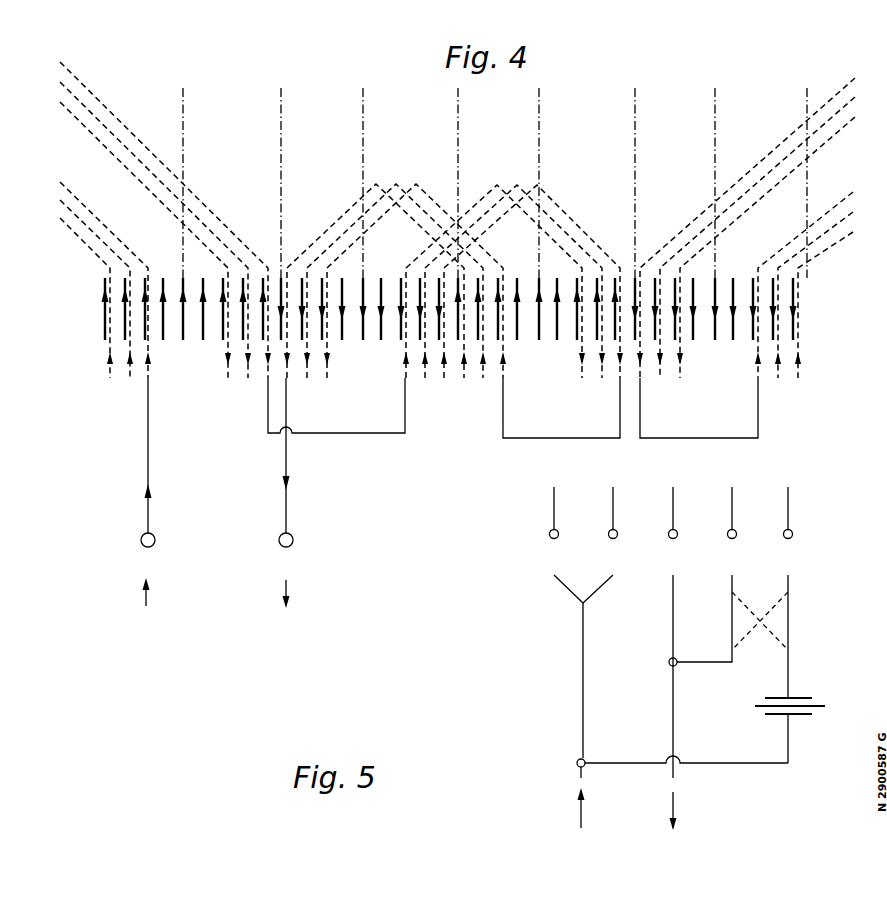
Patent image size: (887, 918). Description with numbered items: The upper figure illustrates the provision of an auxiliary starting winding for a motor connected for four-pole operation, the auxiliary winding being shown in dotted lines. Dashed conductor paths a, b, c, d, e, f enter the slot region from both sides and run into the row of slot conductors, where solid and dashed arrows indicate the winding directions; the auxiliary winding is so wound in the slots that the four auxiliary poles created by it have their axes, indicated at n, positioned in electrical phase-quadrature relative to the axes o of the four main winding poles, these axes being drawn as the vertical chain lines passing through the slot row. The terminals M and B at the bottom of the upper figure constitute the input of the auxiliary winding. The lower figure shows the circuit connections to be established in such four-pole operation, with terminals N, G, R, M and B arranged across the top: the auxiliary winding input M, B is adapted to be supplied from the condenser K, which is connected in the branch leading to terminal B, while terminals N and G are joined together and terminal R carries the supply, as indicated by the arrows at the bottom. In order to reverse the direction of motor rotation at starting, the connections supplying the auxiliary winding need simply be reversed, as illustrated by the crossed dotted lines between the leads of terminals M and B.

In FIG. 4, the flux path a is at (452, 222).
In FIG. 4, the flux path b is at (452, 231).
In FIG. 4, the flux path c is at (452, 242).
In FIG. 4, the flux path d is at (452, 235).
In FIG. 4, the flux path e is at (452, 224).
In FIG. 4, the flux path f is at (452, 213).
In FIG. 4, the auxiliary pole axes n is at (729, 127).
In FIG. 4, the main winding pole axes o is at (793, 97).
In FIG. 4, the terminal M is at (148, 492).
In FIG. 5, the terminal M is at (732, 574).
In FIG. 4, the terminal B is at (285, 493).
In FIG. 5, the terminal B is at (790, 625).
In FIG. 5, the terminal N is at (564, 545).
In FIG. 5, the generator terminal G is at (602, 545).
In FIG. 5, the terminal R is at (673, 658).
In FIG. 5, the condenser K is at (800, 692).